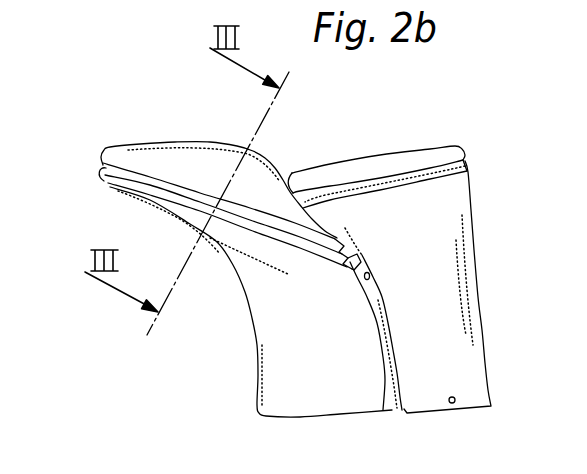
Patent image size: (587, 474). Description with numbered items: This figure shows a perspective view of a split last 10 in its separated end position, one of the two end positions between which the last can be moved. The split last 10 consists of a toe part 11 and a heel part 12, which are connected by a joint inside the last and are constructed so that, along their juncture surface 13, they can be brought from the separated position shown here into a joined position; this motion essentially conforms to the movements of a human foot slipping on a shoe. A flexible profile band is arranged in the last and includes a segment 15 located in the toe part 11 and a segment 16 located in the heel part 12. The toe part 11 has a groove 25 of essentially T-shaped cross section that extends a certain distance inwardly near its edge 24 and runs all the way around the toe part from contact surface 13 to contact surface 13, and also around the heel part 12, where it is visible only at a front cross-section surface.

The split last 10 is at (244, 336).
The toe part 11 is at (136, 151).
The heel part 12 is at (450, 197).
The juncture surface 13 is at (383, 297).
The segment 15 is at (100, 173).
The segment 16 is at (461, 158).
The edge 24 is at (150, 169).
The groove 25 is at (352, 267).